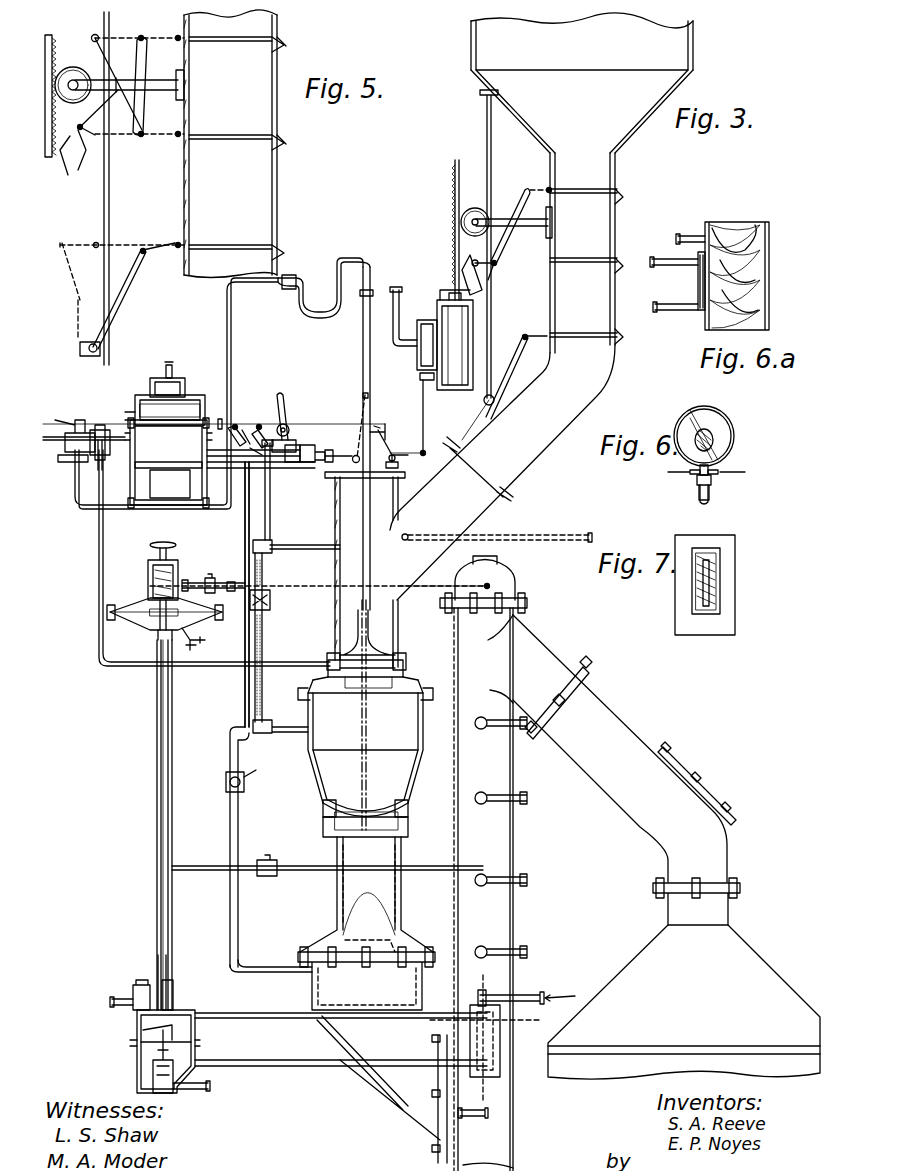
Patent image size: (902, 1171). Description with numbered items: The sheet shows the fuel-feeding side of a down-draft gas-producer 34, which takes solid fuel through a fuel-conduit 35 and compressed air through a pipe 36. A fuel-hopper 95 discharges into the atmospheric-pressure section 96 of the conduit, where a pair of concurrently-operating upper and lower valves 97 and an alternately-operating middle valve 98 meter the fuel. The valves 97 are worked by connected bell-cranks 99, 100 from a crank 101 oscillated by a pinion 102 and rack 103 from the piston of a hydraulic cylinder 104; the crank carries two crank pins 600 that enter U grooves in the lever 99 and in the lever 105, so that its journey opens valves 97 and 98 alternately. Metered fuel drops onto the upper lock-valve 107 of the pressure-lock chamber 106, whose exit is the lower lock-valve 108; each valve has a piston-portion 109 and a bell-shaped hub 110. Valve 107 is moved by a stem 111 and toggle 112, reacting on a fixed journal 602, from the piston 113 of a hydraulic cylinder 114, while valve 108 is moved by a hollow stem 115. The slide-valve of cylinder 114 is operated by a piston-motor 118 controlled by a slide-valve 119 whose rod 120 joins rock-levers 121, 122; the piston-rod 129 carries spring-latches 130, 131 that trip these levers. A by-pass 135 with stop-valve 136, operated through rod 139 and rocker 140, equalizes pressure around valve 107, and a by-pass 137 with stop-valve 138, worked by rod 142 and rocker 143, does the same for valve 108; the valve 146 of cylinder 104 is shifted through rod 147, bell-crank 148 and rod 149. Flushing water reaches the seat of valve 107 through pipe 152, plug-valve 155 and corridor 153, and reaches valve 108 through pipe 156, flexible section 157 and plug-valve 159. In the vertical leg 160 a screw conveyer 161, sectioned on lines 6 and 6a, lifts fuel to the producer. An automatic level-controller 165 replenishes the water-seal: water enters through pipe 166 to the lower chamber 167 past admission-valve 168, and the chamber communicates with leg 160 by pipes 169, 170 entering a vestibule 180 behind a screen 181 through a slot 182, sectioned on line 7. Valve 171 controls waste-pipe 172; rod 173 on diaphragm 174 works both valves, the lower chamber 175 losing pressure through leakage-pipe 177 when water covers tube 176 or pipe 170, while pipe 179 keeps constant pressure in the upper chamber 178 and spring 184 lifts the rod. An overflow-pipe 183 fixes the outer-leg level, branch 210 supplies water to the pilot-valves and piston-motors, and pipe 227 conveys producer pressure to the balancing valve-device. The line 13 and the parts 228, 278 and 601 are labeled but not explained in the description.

In FIG. 3, the fuel-hopper 95 is at (680, 52).
In FIG. 3, the atmospheric-pressure section 96 is at (602, 385).
In FIG. 5, the upper and lower valves 97 is at (262, 38).
In FIG. 3, the upper and lower valves 97 is at (598, 193).
In FIG. 5, the middle valve 98 is at (238, 142).
In FIG. 3, the middle valve 98 is at (600, 262).
In FIG. 5, the bell-crank 99 is at (147, 56).
In FIG. 3, the bell-crank 99 is at (520, 200).
In FIG. 5, the bell-crank 100 is at (128, 292).
In FIG. 3, the bell-crank 100 is at (512, 350).
In FIG. 5, the crank 101 is at (117, 118).
In FIG. 3, the crank 101 is at (476, 235).
In FIG. 5, the pinion 102 is at (76, 104).
In FIG. 3, the pinion 102 is at (476, 207).
In FIG. 5, the rack 103 is at (50, 165).
In FIG. 3, the rack 103 is at (452, 186).
In FIG. 3, the hydraulic cylinder 104 is at (457, 340).
In FIG. 5, the lever 105 is at (140, 106).
In FIG. 3, the lever 105 is at (514, 222).
In FIG. 3, the lock-chamber 106 is at (335, 778).
In FIG. 3, the upper lock-valve 107 is at (378, 670).
In FIG. 3, the lower lock-valve 108 is at (398, 920).
In FIG. 3, the piston-portion 109 is at (345, 662).
In FIG. 3, the bell-shaped hub 110 is at (355, 628).
In FIG. 3, the stem 111 is at (372, 426).
In FIG. 3, the toggle 112 is at (363, 438).
In FIG. 3, the piston 113 is at (192, 462).
In FIG. 3, the hydraulic cylinder 114 is at (165, 462).
In FIG. 3, the stem 115 is at (363, 335).
In FIG. 3, the piston-motor 118 is at (150, 420).
In FIG. 3, the slide-valve 119 is at (182, 396).
In FIG. 3, the rod 120 is at (244, 420).
In FIG. 3, the rock-lever 121 is at (284, 398).
In FIG. 3, the rock-lever 122 is at (286, 412).
In FIG. 3, the piston-rod 129 is at (247, 480).
In FIG. 3, the spring-latch 130 is at (288, 462).
In FIG. 3, the spring-latch 131 is at (328, 460).
In FIG. 3, the by-pass 135 is at (296, 546).
In FIG. 3, the stop-valve 136 is at (275, 598).
In FIG. 3, the by-pass 137 is at (239, 907).
In FIG. 3, the stop-valve 138 is at (247, 782).
In FIG. 3, the rod 139 is at (271, 500).
In FIG. 3, the rocker 140 is at (290, 423).
In FIG. 3, the rod 142 is at (245, 695).
In FIG. 3, the rocker 143 is at (246, 425).
In FIG. 3, the valve 146 is at (428, 322).
In FIG. 3, the rod 147 is at (338, 440).
In FIG. 3, the bell-crank 148 is at (402, 452).
In FIG. 3, the rod 149 is at (425, 424).
In FIG. 3, the pipe 152 is at (98, 573).
In FIG. 3, the corridor 153 is at (325, 672).
In FIG. 3, the plug-valve 155 is at (96, 458).
In FIG. 3, the pipe 156 is at (232, 312).
In FIG. 3, the flexible section 157 is at (342, 260).
In FIG. 3, the plug-valve 159 is at (72, 430).
In FIG. 3, the vertical leg 160 is at (512, 830).
In FIG. 6a, the vertical leg 160 is at (770, 224).
In FIG. 6, the vertical leg 160 is at (716, 414).
In FIG. 7, the vertical leg 160 is at (730, 622).
In FIG. 6a, the screw conveyer 161 is at (770, 250).
In FIG. 6, the screw conveyer 161 is at (728, 434).
In FIG. 3, the automatic level-controller 165 is at (162, 824).
In FIG. 3, the pipe 166 is at (118, 998).
In FIG. 3, the lower chamber 167 is at (138, 1057).
In FIG. 3, the admission-valve 168 is at (140, 1012).
In FIG. 3, the pipe 169 is at (265, 1070).
In FIG. 6a, the pipe 169 is at (675, 310).
In FIG. 6, the pipe 169 is at (699, 496).
In FIG. 3, the pipe 170 is at (245, 1010).
In FIG. 6a, the pipe 170 is at (675, 265).
In FIG. 3, the valve 171 is at (175, 1065).
In FIG. 3, the waste-pipe 172 is at (200, 1090).
In FIG. 3, the rod 173 is at (162, 767).
In FIG. 3, the diaphragm 174 is at (140, 622).
In FIG. 3, the lower-side chamber 175 is at (158, 625).
In FIG. 3, the tube 176 is at (158, 923).
In FIG. 3, the leakage-pipe 177 is at (198, 648).
In FIG. 3, the upper diaphragm-chamber 178 is at (145, 605).
In FIG. 3, the pipe 179 is at (208, 580).
In FIG. 6a, the vestibule 180 is at (700, 288).
In FIG. 6, the vestibule 180 is at (712, 480).
In FIG. 6, the screen 181 is at (712, 474).
In FIG. 7, the screen 181 is at (712, 578).
In FIG. 6, the slot 182 is at (720, 455).
In FIG. 7, the slot 182 is at (710, 584).
In FIG. 3, the overflow-pipe 183 is at (543, 540).
In FIG. 3, the spring 184 is at (172, 580).
In FIG. 3, the branch 210 is at (170, 364).
In FIG. 3, the pipe 227 is at (472, 1120).
In FIG. 3, the bolt 228 is at (497, 727).
In FIG. 3, the plate 278 is at (714, 796).
In FIG. 3, the down-draft gas-producer 34 is at (684, 978).
In FIG. 3, the fuel-conduit 35 is at (612, 733).
In FIG. 3, the pipe 36 is at (541, 996).
In FIG. 6a, the pipe 36 is at (712, 230).
In FIG. 5, the crank pins 600 is at (95, 35).
In FIG. 3, the crank pins 600 is at (470, 262).
In FIG. 5, the link 601 is at (85, 172).
In FIG. 3, the fixed journal 602 is at (423, 424).
In FIG. 3, the center line 13 is at (358, 708).
In FIG. 3, the section line 6 is at (485, 1041).
In FIG. 3, the section line 6a is at (485, 1036).
In FIG. 6, the section line 7 is at (706, 470).